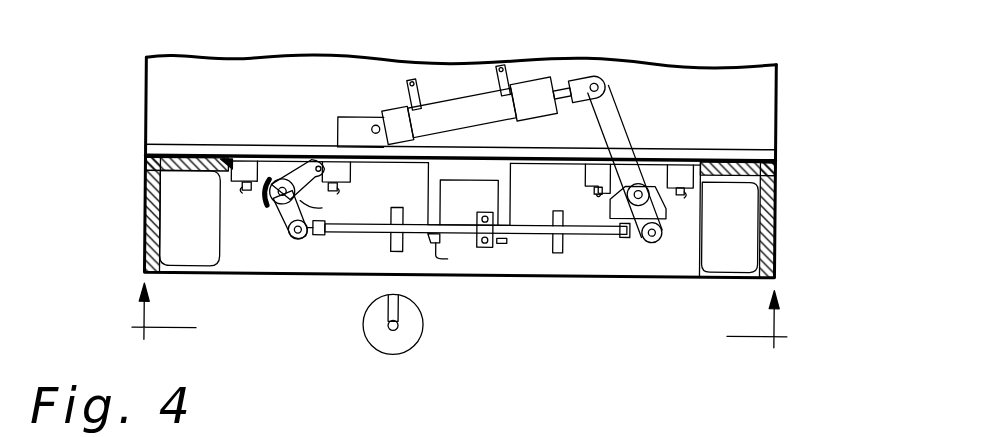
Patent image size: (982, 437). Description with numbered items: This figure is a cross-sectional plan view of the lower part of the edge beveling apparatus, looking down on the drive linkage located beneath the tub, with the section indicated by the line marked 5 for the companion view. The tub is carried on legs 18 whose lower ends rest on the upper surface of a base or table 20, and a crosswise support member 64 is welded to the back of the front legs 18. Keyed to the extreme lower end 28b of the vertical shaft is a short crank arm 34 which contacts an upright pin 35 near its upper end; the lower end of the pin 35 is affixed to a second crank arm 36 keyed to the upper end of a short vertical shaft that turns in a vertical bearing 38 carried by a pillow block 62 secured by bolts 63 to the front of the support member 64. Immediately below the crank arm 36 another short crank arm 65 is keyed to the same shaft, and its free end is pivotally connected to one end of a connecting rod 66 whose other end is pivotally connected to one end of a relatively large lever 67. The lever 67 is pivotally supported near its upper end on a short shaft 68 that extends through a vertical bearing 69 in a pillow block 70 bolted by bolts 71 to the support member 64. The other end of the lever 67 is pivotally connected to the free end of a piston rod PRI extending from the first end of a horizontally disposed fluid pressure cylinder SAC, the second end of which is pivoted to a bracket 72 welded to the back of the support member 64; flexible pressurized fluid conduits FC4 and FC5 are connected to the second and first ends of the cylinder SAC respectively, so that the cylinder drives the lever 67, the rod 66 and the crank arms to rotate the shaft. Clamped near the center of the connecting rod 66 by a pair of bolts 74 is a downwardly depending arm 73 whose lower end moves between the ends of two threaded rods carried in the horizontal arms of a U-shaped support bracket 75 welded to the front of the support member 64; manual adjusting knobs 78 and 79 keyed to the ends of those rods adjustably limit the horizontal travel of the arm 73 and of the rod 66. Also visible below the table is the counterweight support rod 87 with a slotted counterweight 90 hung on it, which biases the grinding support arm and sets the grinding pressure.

The section line 5- 5 is at (460, 336).
The leg 18 is at (147, 213).
The base, platform or table 20 is at (622, 265).
The extreme lower end of shaft 28b is at (275, 187).
The crank arm 34 is at (291, 168).
The upright pin or peg 35 is at (330, 173).
The crank arm 36 is at (313, 198).
The vertical bearing 38 is at (264, 200).
The pillow block 62 is at (266, 205).
The bolt 63 is at (243, 189).
The crosswise support member 64 is at (208, 146).
The crank arm 65 is at (288, 236).
The connecting rod 66 is at (333, 235).
The crank arm or lever 67 is at (614, 121).
The shaft or axle 68 is at (641, 181).
The vertical bearing 69 is at (621, 201).
The pillow block 70 is at (684, 172).
The bolt 71 is at (598, 185).
The bracket 72 is at (356, 128).
The downwardly depending arm 73 is at (491, 226).
The bolt 74 is at (481, 221).
The U-shaped support bracket 75 is at (454, 257).
The manual adjusting knob 78 is at (397, 247).
The manual adjusting knob 79 is at (563, 247).
The counterweight support rod 87 is at (374, 326).
The counterweight 90 is at (405, 325).
The flexible pressurized fluid conduit FC4 is at (410, 81).
The flexible pressurized fluid conduit FC5 is at (500, 66).
The fluid pressure cylinder SAC is at (462, 108).
The piston rod PRI is at (560, 82).